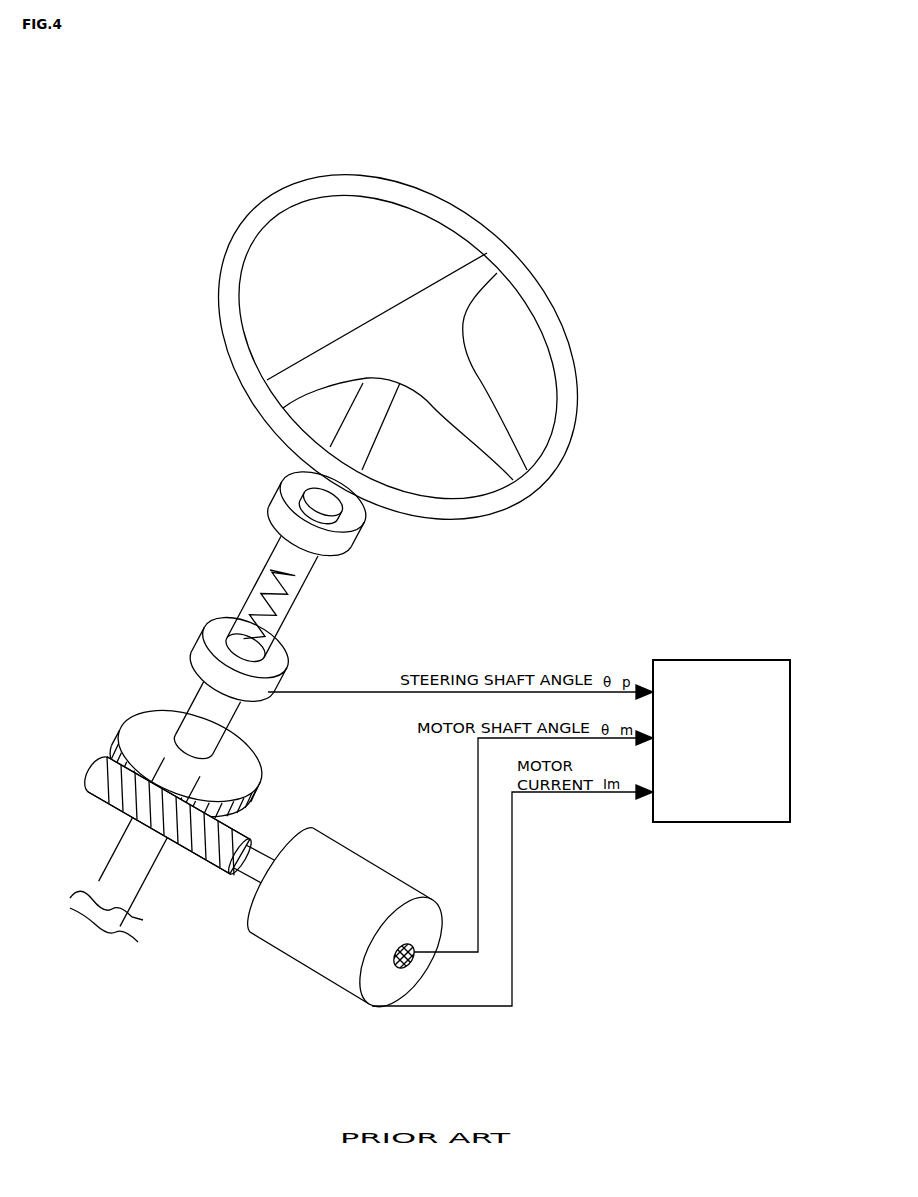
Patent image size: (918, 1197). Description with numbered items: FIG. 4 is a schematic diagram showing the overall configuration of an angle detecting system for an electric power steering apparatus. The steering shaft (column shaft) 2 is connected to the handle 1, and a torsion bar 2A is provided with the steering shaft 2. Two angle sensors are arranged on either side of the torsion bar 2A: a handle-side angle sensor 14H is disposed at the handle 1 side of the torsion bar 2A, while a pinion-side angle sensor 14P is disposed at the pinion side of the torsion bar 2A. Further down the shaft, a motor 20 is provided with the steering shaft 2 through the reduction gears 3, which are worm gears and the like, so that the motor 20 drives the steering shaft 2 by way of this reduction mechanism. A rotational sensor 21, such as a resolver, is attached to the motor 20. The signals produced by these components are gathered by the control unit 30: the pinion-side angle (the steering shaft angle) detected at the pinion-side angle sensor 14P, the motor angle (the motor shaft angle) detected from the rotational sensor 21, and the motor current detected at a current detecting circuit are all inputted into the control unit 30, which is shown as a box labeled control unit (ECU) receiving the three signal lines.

The handle 1 is at (482, 227).
The handle-side angle sensor 14H is at (347, 547).
The torsion bar 2A is at (295, 612).
The pinion-side angle sensor 14P is at (193, 655).
The steering shaft 2 is at (153, 877).
The reduction gears 3 is at (249, 820).
The motor 20 is at (387, 871).
The rotational sensor 21 is at (413, 965).
The control unit 30 is at (770, 659).